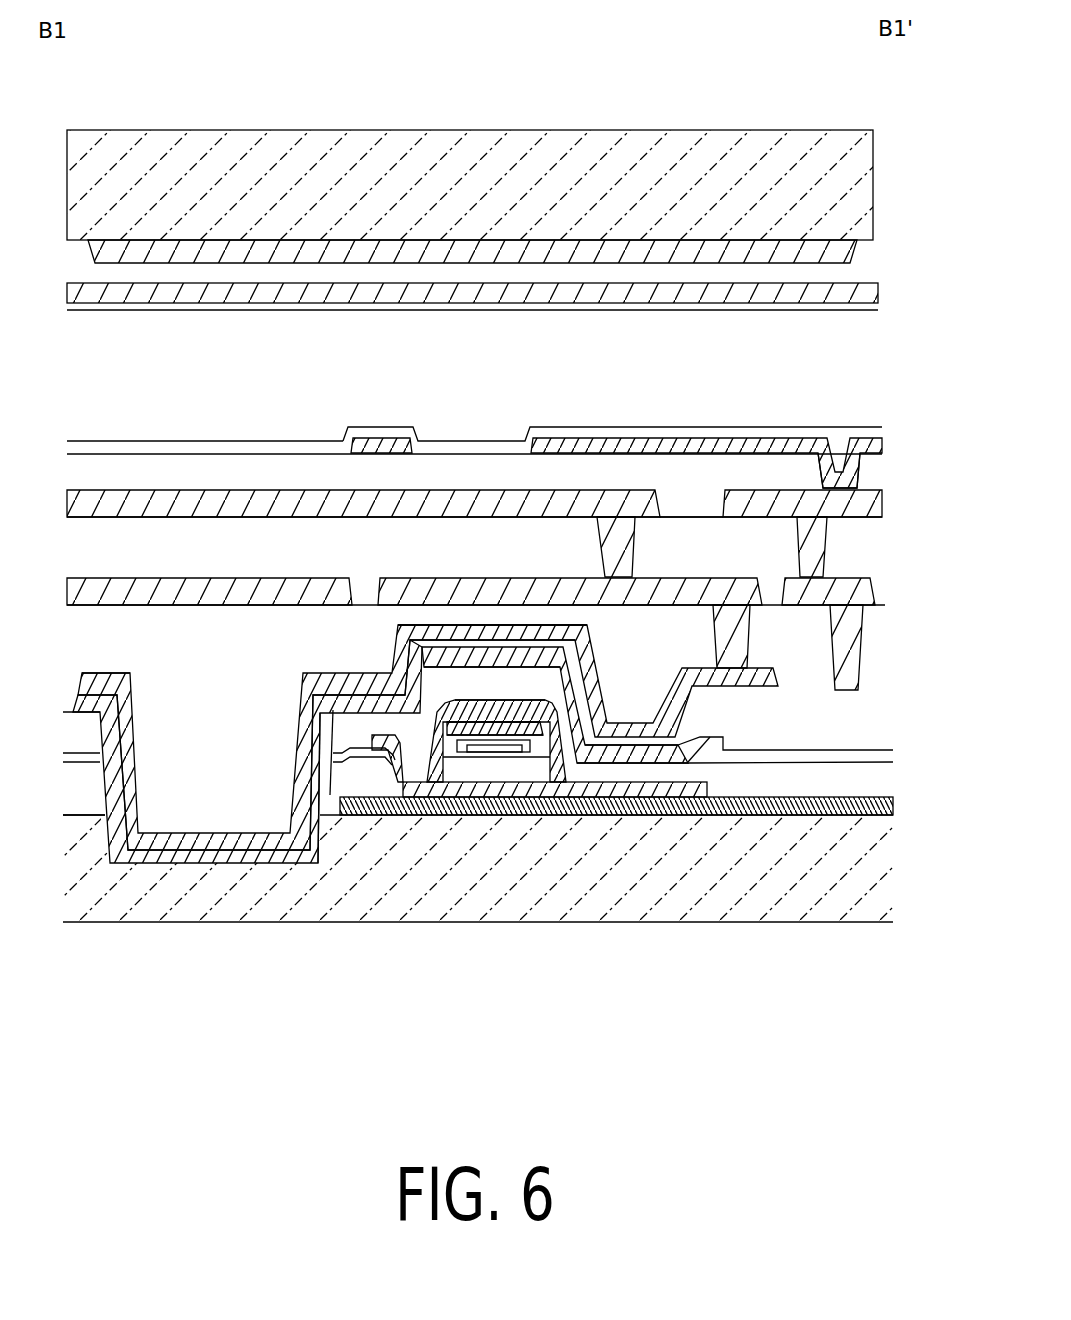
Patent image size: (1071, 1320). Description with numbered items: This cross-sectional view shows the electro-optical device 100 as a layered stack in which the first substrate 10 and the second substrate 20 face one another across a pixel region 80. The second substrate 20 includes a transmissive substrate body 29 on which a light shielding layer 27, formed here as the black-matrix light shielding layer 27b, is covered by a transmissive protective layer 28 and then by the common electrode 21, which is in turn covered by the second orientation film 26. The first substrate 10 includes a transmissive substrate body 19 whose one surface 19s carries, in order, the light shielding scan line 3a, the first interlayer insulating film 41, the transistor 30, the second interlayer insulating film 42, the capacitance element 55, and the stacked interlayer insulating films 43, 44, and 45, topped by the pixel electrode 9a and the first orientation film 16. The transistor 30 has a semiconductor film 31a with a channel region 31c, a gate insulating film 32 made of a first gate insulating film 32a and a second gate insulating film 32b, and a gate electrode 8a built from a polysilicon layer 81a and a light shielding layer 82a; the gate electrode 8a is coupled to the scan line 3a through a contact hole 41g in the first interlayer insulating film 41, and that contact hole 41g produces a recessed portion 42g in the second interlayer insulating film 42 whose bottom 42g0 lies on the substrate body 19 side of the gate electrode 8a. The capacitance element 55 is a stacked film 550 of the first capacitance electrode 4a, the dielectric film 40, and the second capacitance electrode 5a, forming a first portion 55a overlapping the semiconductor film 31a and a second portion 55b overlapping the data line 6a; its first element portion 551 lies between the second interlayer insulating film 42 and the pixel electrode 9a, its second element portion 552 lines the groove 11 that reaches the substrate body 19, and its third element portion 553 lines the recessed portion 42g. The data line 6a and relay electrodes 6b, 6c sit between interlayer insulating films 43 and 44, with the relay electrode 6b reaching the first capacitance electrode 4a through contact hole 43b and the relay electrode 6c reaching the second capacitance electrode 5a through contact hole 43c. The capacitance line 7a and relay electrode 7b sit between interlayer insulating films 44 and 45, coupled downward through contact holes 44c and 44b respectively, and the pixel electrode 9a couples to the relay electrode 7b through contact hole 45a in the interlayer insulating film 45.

The electro-optical device 100 is at (764, 119).
The second substrate 20 is at (66, 130).
The substrate body 29 is at (835, 148).
The transmissive protective layer 28 is at (278, 272).
The light shielding layer 27 is at (472, 147).
The light shielding layer 27b is at (482, 250).
The common electrode 21 is at (167, 293).
The second orientation film 26 is at (235, 300).
The first substrate 10 is at (58, 922).
The pixel region 80 is at (218, 401).
The first orientation film 16 is at (612, 430).
The pixel electrode 9a is at (367, 443).
The contact hole 45a is at (828, 480).
The interlayer insulating film 45 is at (847, 477).
The capacitance line 7a is at (550, 505).
The relay electrode 7b is at (733, 510).
The interlayer insulating film 44 is at (866, 560).
The contact hole 44c is at (604, 552).
The contact hole 44b is at (797, 549).
The data line 6a is at (145, 593).
The relay electrode 6c is at (643, 588).
The relay electrode 6b is at (812, 588).
The interlayer insulating film 43 is at (866, 677).
The contact hole 43c is at (722, 643).
The contact hole 43b is at (828, 645).
The capacitance element 55 is at (250, 627).
The stacked film 550 is at (483, 845).
The first element portion 551 is at (391, 650).
The second element portion 552 is at (290, 758).
The third element portion 553 is at (708, 772).
The second portion 55b is at (108, 673).
The first portion 55a is at (419, 623).
The second capacitance electrode 5a is at (468, 633).
The dielectric film 40 is at (497, 643).
The first capacitance electrode 4a is at (533, 655).
The second interlayer insulating film 42 is at (862, 730).
The first interlayer insulating film 41 is at (858, 770).
The scan line 3a is at (576, 753).
The substrate body 19 is at (858, 875).
The one surface 19s is at (82, 815).
The groove 11 is at (328, 785).
The transistor 30 is at (457, 762).
The gate electrode 8a is at (552, 869).
The polysilicon layer 81a is at (530, 732).
The light shielding layer 82a is at (540, 722).
The gate insulating film 32 is at (502, 880).
The first gate insulating film 32a is at (505, 752).
The second gate insulating film 32b is at (518, 745).
The semiconductor film 31a is at (482, 753).
The channel region 31c is at (479, 898).
The contact hole 41g is at (392, 750).
The bottom 42g0 is at (620, 762).
The recessed portion 42g is at (693, 726).